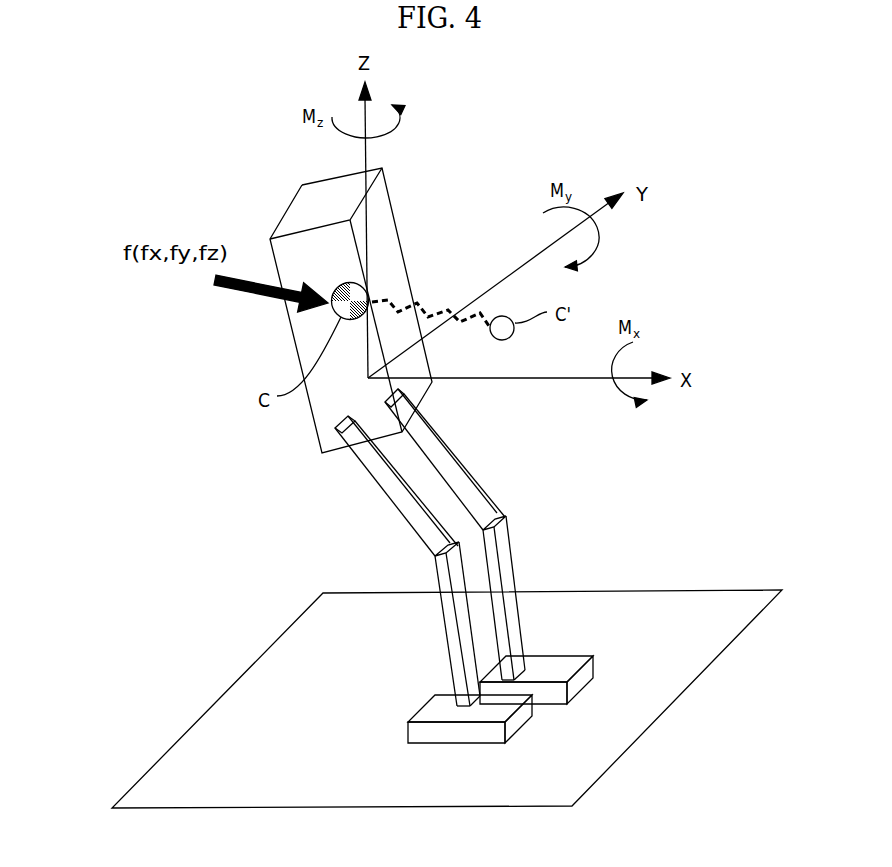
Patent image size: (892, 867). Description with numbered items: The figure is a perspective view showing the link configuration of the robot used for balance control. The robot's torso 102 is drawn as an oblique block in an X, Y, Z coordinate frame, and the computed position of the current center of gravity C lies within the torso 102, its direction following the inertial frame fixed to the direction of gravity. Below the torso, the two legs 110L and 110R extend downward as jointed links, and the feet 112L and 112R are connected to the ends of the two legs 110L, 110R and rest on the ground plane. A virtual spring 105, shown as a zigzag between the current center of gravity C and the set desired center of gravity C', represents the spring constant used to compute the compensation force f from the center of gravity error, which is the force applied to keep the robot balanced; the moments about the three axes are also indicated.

The torso 102 is at (293, 212).
The virtual spring 105 is at (443, 304).
The left leg 110L is at (458, 461).
The right leg 110R is at (390, 495).
The left foot 112L is at (570, 660).
The right foot 112R is at (437, 735).